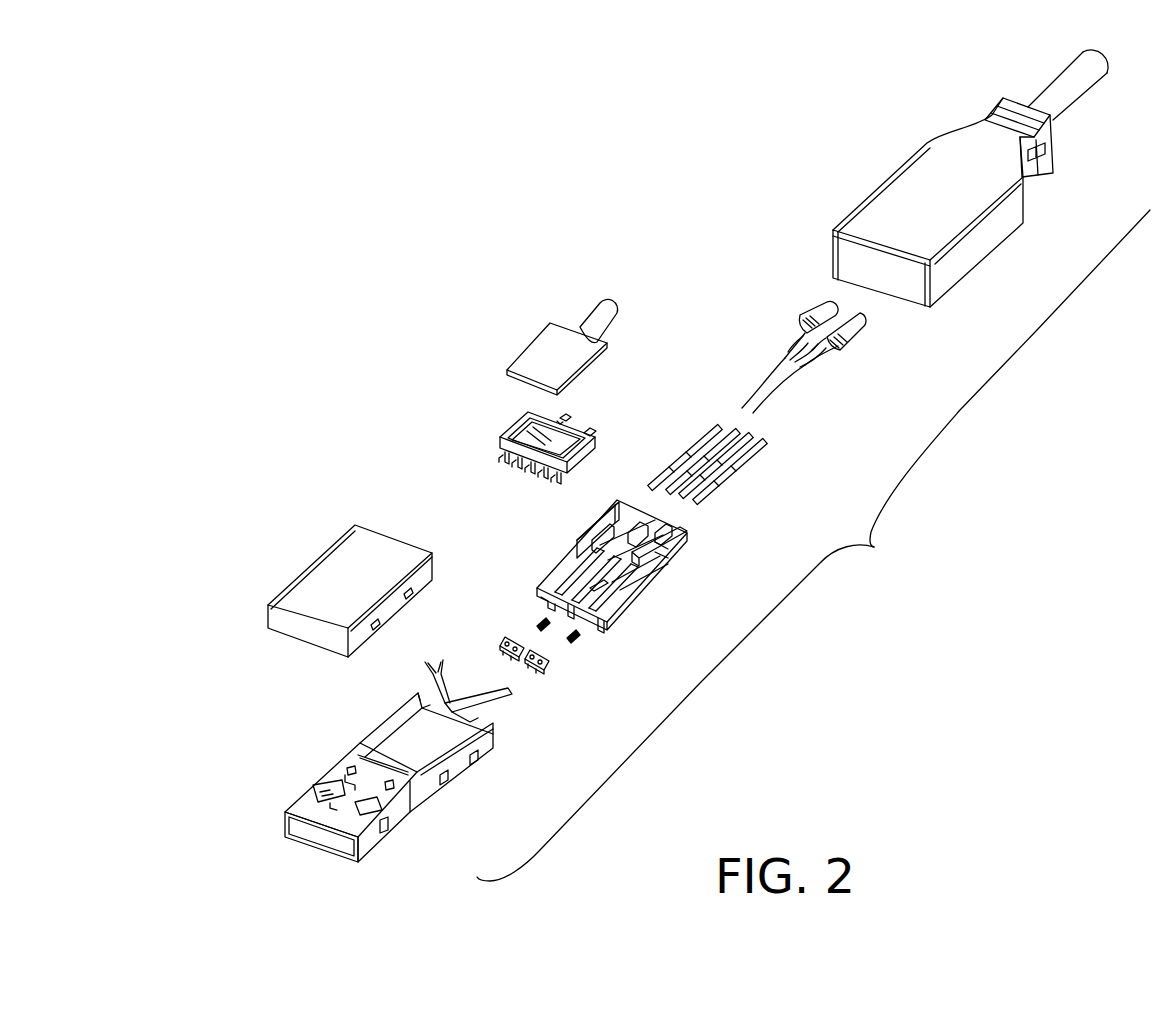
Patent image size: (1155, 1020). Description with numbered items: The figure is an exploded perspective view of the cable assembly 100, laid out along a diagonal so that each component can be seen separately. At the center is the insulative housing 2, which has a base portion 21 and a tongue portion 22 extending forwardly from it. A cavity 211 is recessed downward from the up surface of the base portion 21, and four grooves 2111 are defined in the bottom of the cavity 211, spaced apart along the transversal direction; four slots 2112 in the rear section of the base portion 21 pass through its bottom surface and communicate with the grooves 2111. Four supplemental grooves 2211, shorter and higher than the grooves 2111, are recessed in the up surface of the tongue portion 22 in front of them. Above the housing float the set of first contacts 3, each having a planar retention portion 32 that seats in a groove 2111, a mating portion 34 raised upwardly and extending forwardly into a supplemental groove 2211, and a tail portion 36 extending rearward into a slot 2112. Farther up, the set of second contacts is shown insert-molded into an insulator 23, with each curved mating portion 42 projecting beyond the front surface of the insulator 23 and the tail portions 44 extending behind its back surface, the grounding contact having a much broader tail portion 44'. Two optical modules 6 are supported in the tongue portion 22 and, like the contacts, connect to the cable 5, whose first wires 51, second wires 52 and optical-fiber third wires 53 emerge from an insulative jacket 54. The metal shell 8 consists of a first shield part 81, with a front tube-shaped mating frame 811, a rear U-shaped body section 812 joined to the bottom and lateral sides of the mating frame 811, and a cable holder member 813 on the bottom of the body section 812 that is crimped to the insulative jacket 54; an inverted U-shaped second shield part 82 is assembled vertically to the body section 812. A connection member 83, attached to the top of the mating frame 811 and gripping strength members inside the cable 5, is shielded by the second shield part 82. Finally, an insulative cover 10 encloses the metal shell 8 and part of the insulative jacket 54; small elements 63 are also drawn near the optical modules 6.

The cable assembly 100 is at (813, 545).
The insulative housing 2 is at (644, 569).
The base portion 21 is at (685, 550).
The cavity 211 is at (600, 530).
The grooves 2111 is at (632, 530).
The slots 2112 is at (660, 532).
The tongue portion 22 is at (637, 595).
The supplemental grooves 2211 is at (597, 593).
The insulator 23 is at (530, 421).
The first contacts 3 is at (719, 443).
The retention portion 32 is at (683, 463).
The mating portion 34 is at (652, 482).
The tail portion 36 is at (688, 458).
The curved mating portion 42 is at (520, 462).
The tail portion 44 is at (615, 414).
The tail portion 44' is at (593, 394).
The cable 5 is at (911, 248).
The first wires 51 is at (860, 337).
The second wires 52 is at (862, 317).
The third wires 53 is at (795, 383).
The insulative jacket 54 is at (1050, 82).
The optical modules 6 is at (560, 670).
The electronic element 63 is at (584, 644).
The metal shell 8 is at (230, 507).
The first shield part 81 is at (397, 762).
The mating frame 811 is at (403, 812).
The body section 812 is at (455, 773).
The cable holder member 813 is at (503, 700).
The second shield part 82 is at (318, 548).
The connection member 83 is at (520, 335).
The insulative cover 10 is at (1002, 223).